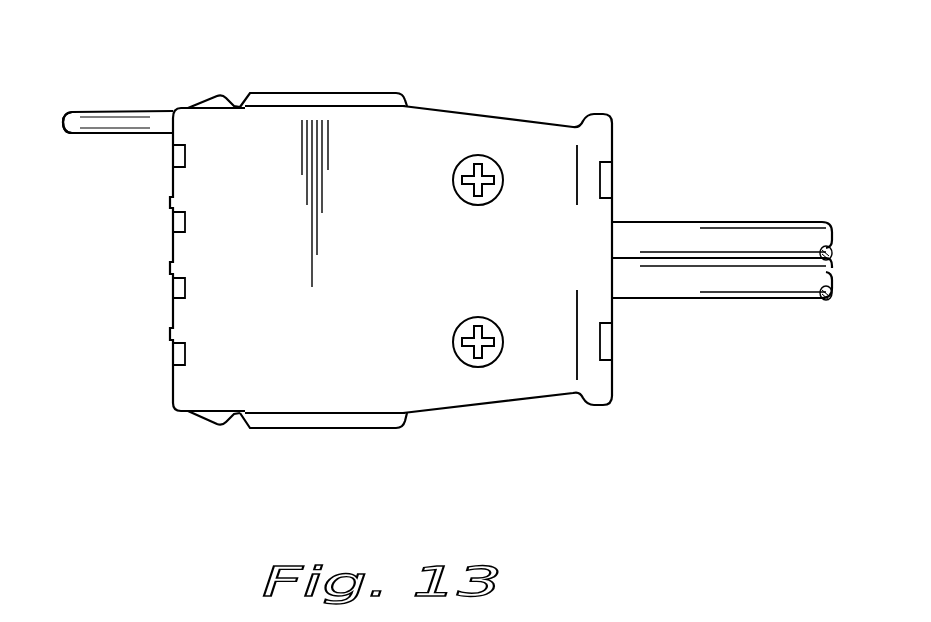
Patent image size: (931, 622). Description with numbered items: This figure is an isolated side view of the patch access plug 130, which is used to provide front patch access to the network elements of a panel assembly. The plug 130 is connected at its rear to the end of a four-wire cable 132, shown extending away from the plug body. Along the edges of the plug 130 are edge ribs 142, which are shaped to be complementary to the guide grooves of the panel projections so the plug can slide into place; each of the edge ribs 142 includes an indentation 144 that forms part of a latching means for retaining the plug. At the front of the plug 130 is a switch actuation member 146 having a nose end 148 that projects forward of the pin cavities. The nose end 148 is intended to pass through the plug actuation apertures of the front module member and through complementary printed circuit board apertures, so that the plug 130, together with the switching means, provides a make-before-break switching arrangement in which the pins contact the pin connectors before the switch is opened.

The patch access plug 130 is at (463, 110).
The four-wire cable 132 is at (662, 240).
The edge ribs 142 is at (313, 100).
The indentation 144 is at (241, 102).
The switch actuation member 146 is at (116, 120).
The nose end 148 is at (68, 115).